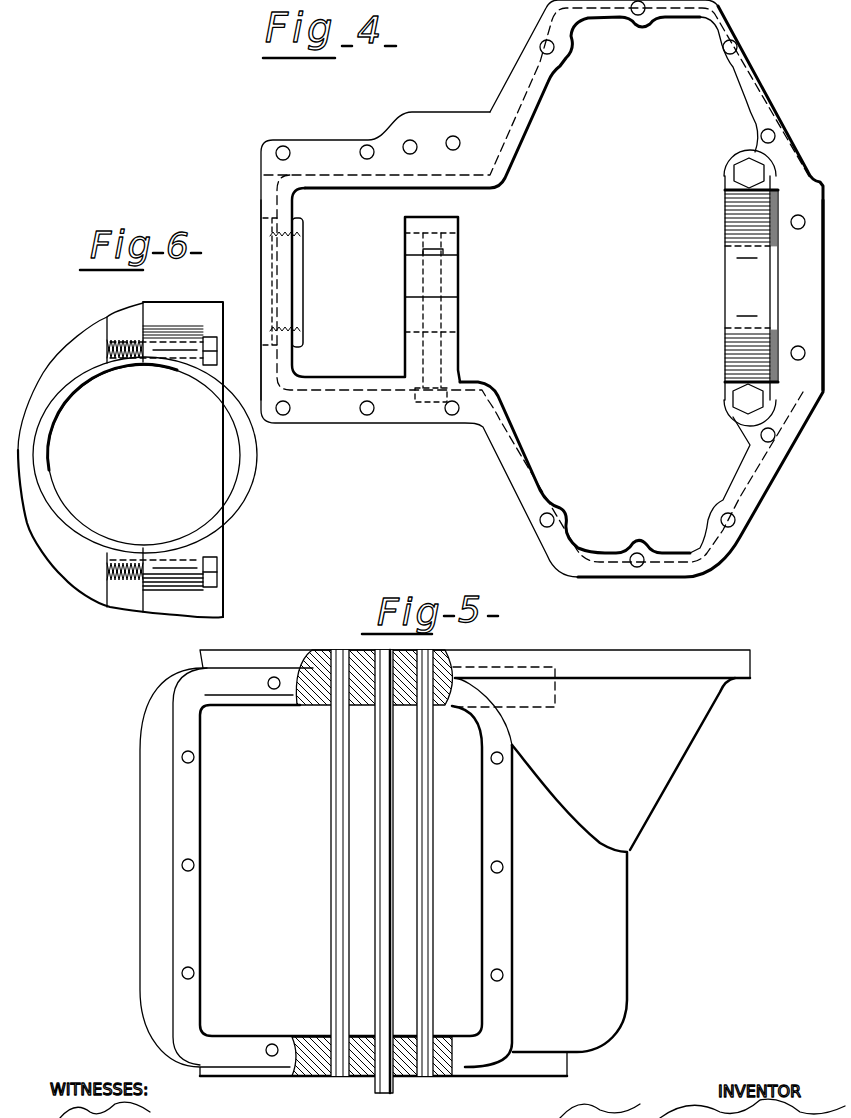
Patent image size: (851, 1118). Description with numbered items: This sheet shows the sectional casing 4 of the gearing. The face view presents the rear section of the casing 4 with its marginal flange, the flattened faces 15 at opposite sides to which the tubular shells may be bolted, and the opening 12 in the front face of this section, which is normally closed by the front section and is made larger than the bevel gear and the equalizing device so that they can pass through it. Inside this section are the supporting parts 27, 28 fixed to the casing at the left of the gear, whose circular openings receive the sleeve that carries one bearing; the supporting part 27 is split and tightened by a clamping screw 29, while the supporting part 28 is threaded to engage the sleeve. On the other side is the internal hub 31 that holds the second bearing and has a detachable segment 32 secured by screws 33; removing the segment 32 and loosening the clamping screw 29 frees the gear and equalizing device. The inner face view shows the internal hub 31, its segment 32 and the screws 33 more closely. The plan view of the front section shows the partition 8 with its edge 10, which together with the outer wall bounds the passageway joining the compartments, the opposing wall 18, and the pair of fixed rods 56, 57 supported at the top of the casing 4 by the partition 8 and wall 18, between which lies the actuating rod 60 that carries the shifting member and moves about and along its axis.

In FIG. 4, the casing 4 is at (532, 68).
In FIG. 6, the casing 4 is at (80, 342).
In FIG. 5, the casing 4 is at (193, 802).
In FIG. 5, the partition 8 is at (300, 703).
In FIG. 5, the edge of the partition 10 is at (557, 697).
In FIG. 4, the opening 12 is at (537, 93).
In FIG. 4, the flattened faces 15 is at (262, 247).
In FIG. 5, the opposing wall 18 is at (330, 1037).
In FIG. 4, the supporting part 27 is at (452, 244).
In FIG. 4, the supporting part 28 is at (298, 272).
In FIG. 4, the clamping screw 29 is at (458, 300).
In FIG. 4, the internal hub 31 is at (771, 277).
In FIG. 6, the internal hub 31 is at (56, 407).
In FIG. 4, the detachable segment 32 is at (751, 288).
In FIG. 6, the detachable segment 32 is at (249, 472).
In FIG. 4, the screws 33 is at (745, 172).
In FIG. 6, the screws 33 is at (207, 352).
In FIG. 5, the fixed rod 56 is at (425, 838).
In FIG. 5, the fixed rod 57 is at (336, 840).
In FIG. 5, the actuating rod 60 is at (382, 866).